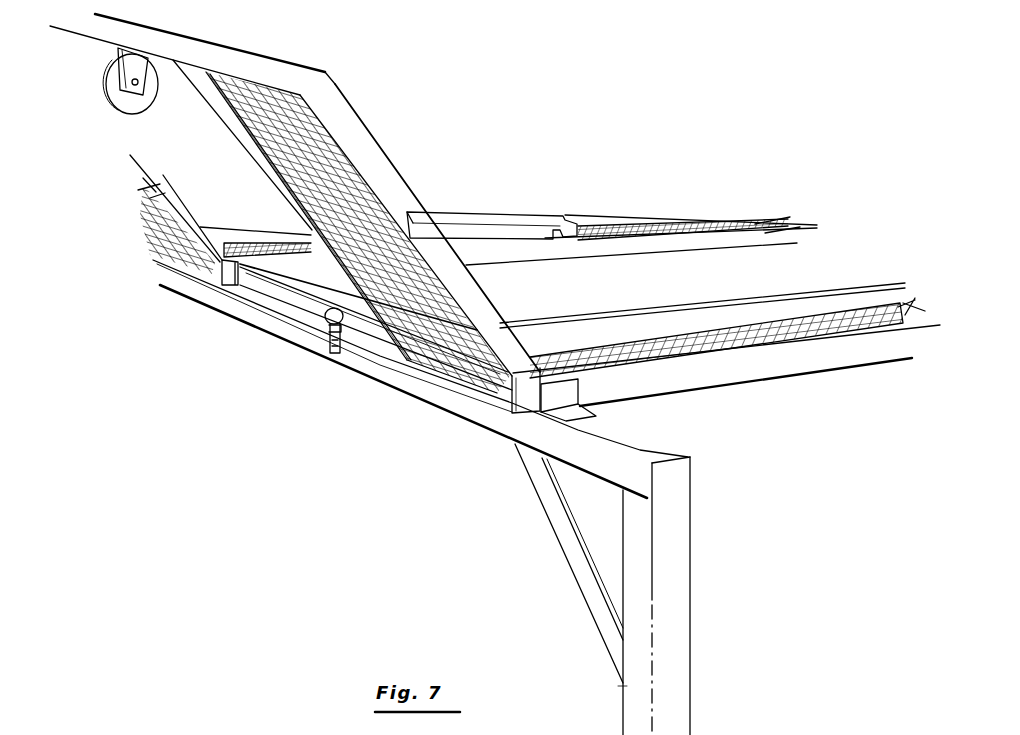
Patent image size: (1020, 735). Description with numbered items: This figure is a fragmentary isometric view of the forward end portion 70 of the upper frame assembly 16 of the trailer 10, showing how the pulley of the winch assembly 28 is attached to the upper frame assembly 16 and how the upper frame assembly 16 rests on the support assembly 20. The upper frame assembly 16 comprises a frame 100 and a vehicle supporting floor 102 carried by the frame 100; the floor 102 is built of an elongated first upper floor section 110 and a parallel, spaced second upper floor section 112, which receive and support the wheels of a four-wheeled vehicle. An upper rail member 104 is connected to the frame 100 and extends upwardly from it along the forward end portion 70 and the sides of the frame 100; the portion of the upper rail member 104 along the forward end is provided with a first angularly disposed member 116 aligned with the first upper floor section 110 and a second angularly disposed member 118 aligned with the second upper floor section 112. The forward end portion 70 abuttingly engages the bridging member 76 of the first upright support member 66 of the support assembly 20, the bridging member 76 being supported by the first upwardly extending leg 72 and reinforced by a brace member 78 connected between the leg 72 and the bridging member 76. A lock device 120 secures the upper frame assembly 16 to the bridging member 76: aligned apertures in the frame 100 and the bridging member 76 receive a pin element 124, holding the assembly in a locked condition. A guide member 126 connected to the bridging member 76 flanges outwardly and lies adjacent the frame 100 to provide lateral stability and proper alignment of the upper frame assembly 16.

The trailer 10 is at (573, 98).
The upper frame assembly 16 is at (656, 196).
The support assembly 20 is at (620, 589).
The winch assembly 28 is at (95, 118).
The first upright support member 66 is at (621, 690).
The forward end portion 70 is at (622, 395).
The first upwardly extending leg 72 is at (676, 617).
The bridging member 76 is at (383, 386).
The brace member 78 is at (533, 483).
The frame 100 is at (598, 213).
The vehicle supporting floor 102 is at (779, 214).
The upper rail member 104 is at (350, 92).
The first upper floor section 110 is at (737, 348).
The second upper floor section 112 is at (701, 216).
The first angularly disposed member 116 is at (295, 188).
The second angularly disposed member 118 is at (152, 231).
The lock device 120 is at (322, 344).
The pin element 124 is at (327, 349).
The guide member 126 is at (560, 392).